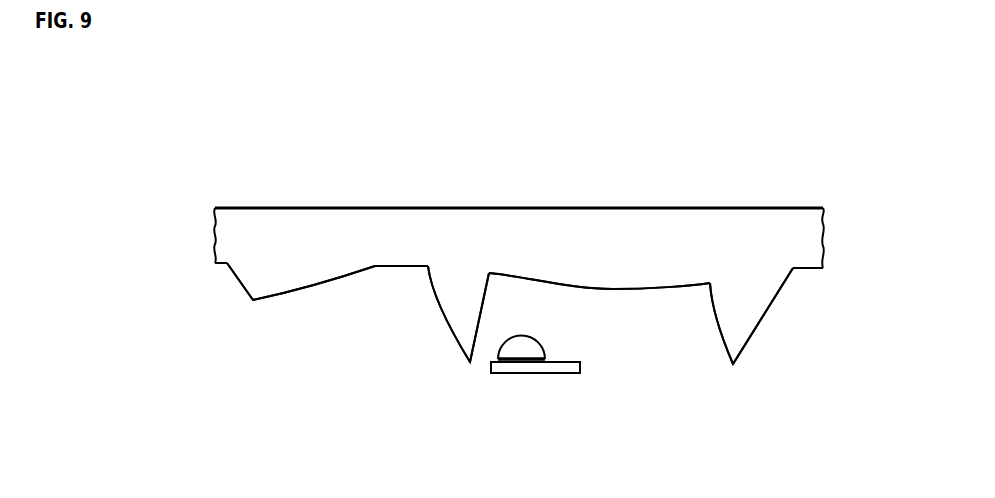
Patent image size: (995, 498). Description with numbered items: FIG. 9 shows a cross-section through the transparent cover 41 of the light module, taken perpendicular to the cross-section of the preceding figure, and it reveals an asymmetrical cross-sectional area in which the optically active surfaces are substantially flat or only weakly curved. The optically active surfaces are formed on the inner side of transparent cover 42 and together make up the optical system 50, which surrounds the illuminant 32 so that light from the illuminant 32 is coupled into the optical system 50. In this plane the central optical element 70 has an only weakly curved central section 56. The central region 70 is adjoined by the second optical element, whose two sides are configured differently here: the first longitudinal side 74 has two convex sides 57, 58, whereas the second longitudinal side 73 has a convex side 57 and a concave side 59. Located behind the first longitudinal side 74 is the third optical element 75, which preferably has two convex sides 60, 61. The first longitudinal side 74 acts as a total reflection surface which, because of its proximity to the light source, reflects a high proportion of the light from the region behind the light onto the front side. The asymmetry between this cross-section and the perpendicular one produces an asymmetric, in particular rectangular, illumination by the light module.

The transparent cover 41 is at (255, 228).
The inner side of transparent cover 42 is at (808, 273).
The third optical element 75 is at (264, 278).
The first longitudinal side of second optical element 74 is at (462, 281).
The central optical element 70 is at (600, 269).
The second longitudinal side of second optical element 73 is at (747, 287).
The convex side 61 is at (242, 287).
The convex side 60 is at (282, 300).
The convex side 58 is at (435, 308).
The convex side 57 is at (490, 292).
The central section 56 is at (605, 290).
The concave side 59 is at (747, 337).
The illuminant 32 is at (520, 350).
The optical system 50 is at (643, 361).